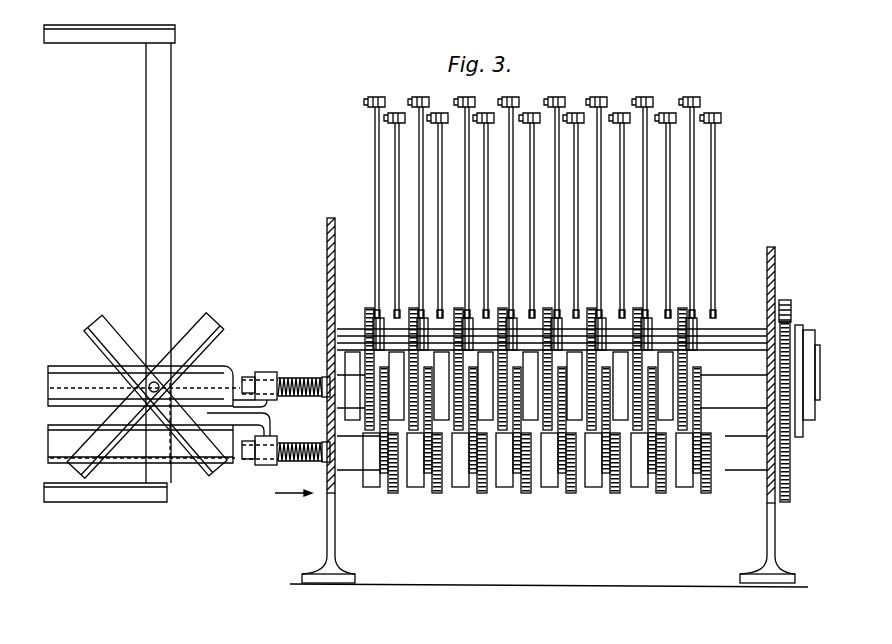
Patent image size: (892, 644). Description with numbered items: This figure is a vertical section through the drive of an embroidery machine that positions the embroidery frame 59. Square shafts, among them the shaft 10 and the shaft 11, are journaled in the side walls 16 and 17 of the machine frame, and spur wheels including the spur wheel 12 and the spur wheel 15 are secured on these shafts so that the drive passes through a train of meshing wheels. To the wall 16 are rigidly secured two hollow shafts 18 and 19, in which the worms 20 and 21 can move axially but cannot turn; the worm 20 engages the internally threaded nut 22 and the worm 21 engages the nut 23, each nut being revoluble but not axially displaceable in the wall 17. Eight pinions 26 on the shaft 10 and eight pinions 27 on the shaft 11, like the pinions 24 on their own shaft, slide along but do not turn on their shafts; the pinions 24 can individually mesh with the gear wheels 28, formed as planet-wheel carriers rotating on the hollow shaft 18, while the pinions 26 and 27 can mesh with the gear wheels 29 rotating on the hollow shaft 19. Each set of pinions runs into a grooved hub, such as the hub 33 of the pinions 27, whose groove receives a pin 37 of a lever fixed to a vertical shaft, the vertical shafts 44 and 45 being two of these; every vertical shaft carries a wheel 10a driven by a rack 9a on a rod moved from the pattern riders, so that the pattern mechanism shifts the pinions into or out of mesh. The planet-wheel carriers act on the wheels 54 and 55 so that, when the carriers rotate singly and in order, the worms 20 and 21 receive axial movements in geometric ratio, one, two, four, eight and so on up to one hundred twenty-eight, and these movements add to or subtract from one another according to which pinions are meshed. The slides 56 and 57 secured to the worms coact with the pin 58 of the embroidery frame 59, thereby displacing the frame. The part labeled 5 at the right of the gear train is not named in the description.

The drive wheel 5 is at (801, 400).
The rack 9a is at (417, 99).
The wheel 10a is at (470, 99).
The shaft 10 is at (716, 350).
The shaft 11 is at (725, 333).
The spur wheel 12 is at (790, 480).
The spur wheel 15 is at (791, 306).
The side wall 16 is at (767, 298).
The side wall 17 is at (330, 292).
The hollow shaft 18 is at (552, 453).
The hollow shaft 19 is at (552, 391).
The worm 20 is at (311, 463).
The worm 21 is at (306, 378).
The internally threaded sleeve or nut 22 is at (328, 438).
The internally threaded sleeve or nut 23 is at (328, 407).
The pinions 24 is at (433, 494).
The pinions 26 is at (632, 314).
The pinions 27 is at (364, 313).
The gear wheels formed as planet-wheel carriers 28 is at (594, 479).
The gear wheels formed as planet-wheel carriers 29 is at (398, 310).
The hub 33 is at (456, 314).
The pin 37 is at (549, 316).
The vertical shaft 44 is at (487, 249).
The vertical shaft 45 is at (372, 234).
The wheel 54 is at (410, 480).
The wheel 55 is at (670, 396).
The slide 56 is at (186, 462).
The slide 57 is at (217, 369).
The pin 58 is at (156, 381).
The embroidery frame 59 is at (171, 298).